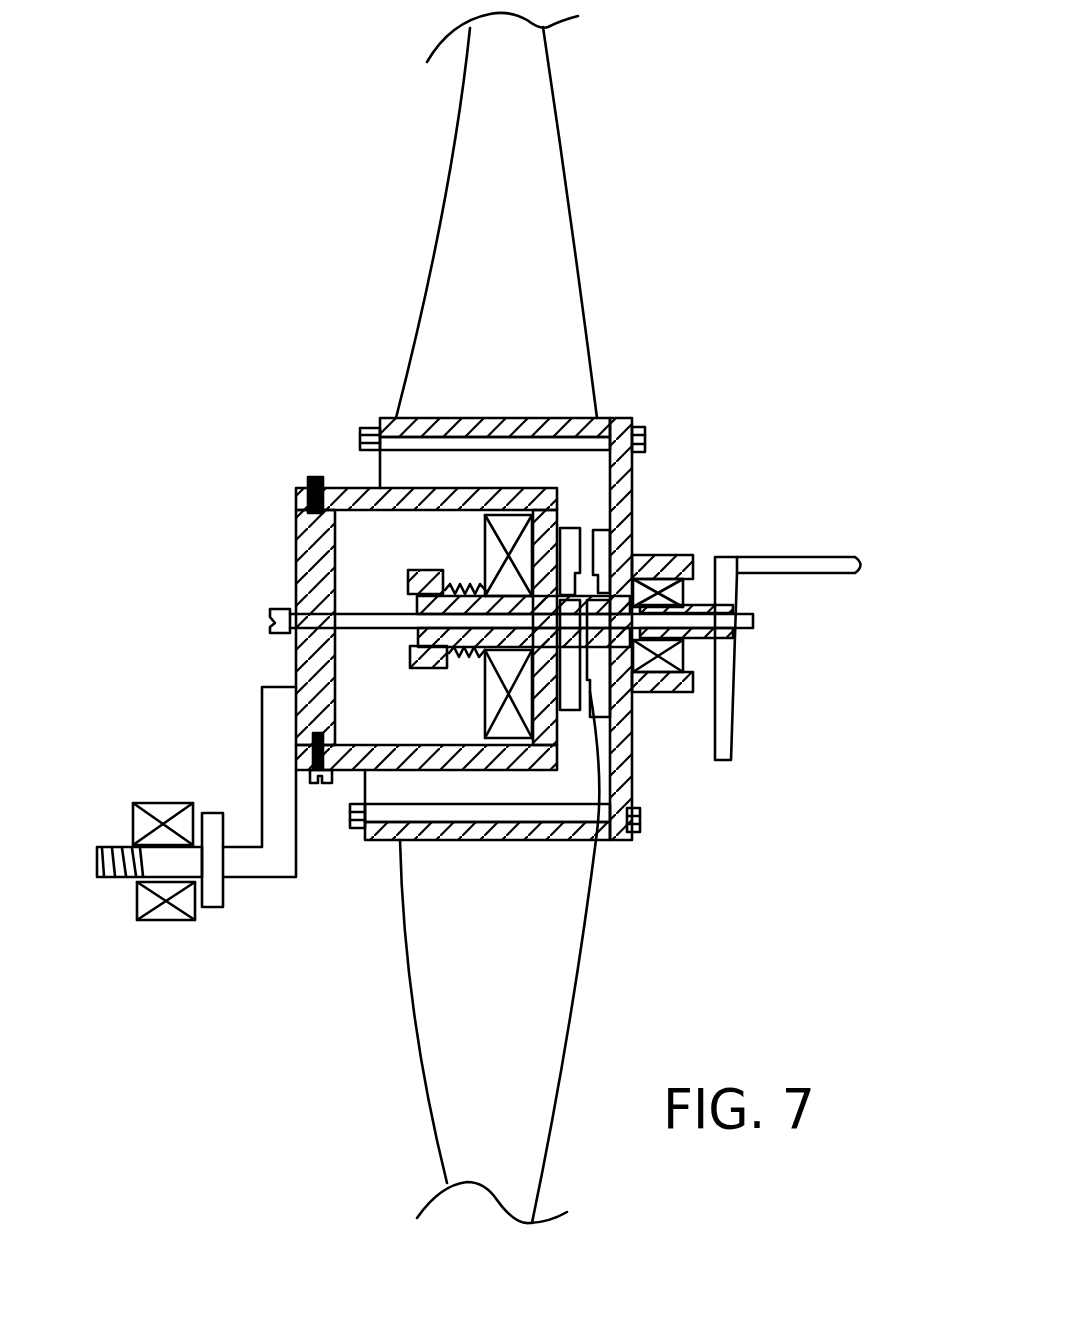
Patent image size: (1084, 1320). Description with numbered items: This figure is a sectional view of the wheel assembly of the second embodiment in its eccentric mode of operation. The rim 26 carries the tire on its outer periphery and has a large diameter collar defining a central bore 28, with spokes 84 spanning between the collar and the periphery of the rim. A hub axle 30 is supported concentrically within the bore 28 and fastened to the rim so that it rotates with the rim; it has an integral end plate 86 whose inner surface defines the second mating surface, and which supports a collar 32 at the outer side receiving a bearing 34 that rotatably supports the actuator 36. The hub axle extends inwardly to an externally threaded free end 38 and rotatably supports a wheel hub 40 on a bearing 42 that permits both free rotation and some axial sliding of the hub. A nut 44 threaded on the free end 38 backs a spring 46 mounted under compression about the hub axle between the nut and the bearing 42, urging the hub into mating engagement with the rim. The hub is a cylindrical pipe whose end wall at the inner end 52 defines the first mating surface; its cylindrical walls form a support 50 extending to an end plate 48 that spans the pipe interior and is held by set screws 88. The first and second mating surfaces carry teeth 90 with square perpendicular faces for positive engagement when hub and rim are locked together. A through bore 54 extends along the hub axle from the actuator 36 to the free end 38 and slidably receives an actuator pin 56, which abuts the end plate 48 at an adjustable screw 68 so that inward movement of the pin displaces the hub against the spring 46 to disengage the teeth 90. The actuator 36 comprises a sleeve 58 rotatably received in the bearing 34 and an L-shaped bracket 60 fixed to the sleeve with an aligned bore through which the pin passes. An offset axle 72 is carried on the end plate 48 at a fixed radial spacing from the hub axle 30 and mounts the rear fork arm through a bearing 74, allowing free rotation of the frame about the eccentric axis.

The rim 26 is at (573, 416).
The central bore 28 is at (446, 463).
The hub axle 30 is at (518, 515).
The collar 32 is at (674, 557).
The bearing 34 is at (666, 695).
The actuator 36 is at (750, 647).
The free end 38 is at (415, 597).
The wheel hub 40 is at (407, 770).
The bearing 42 is at (487, 717).
The nut 44 is at (410, 658).
The spring 46 is at (485, 650).
The end plate 48 is at (296, 578).
The support 50 is at (368, 492).
The inner end 52 is at (560, 510).
The through bore 54 is at (487, 594).
The actuator pin 56 is at (684, 605).
The sleeve 58 is at (737, 672).
The L-shaped bracket 60 is at (800, 568).
The adjustable screw 68 is at (268, 621).
The offset axle 72 is at (248, 880).
The bearing 74 is at (162, 922).
The spokes 84 is at (548, 193).
The end plate 86 is at (630, 783).
The set screws 88 is at (308, 478).
The teeth 90 is at (568, 712).